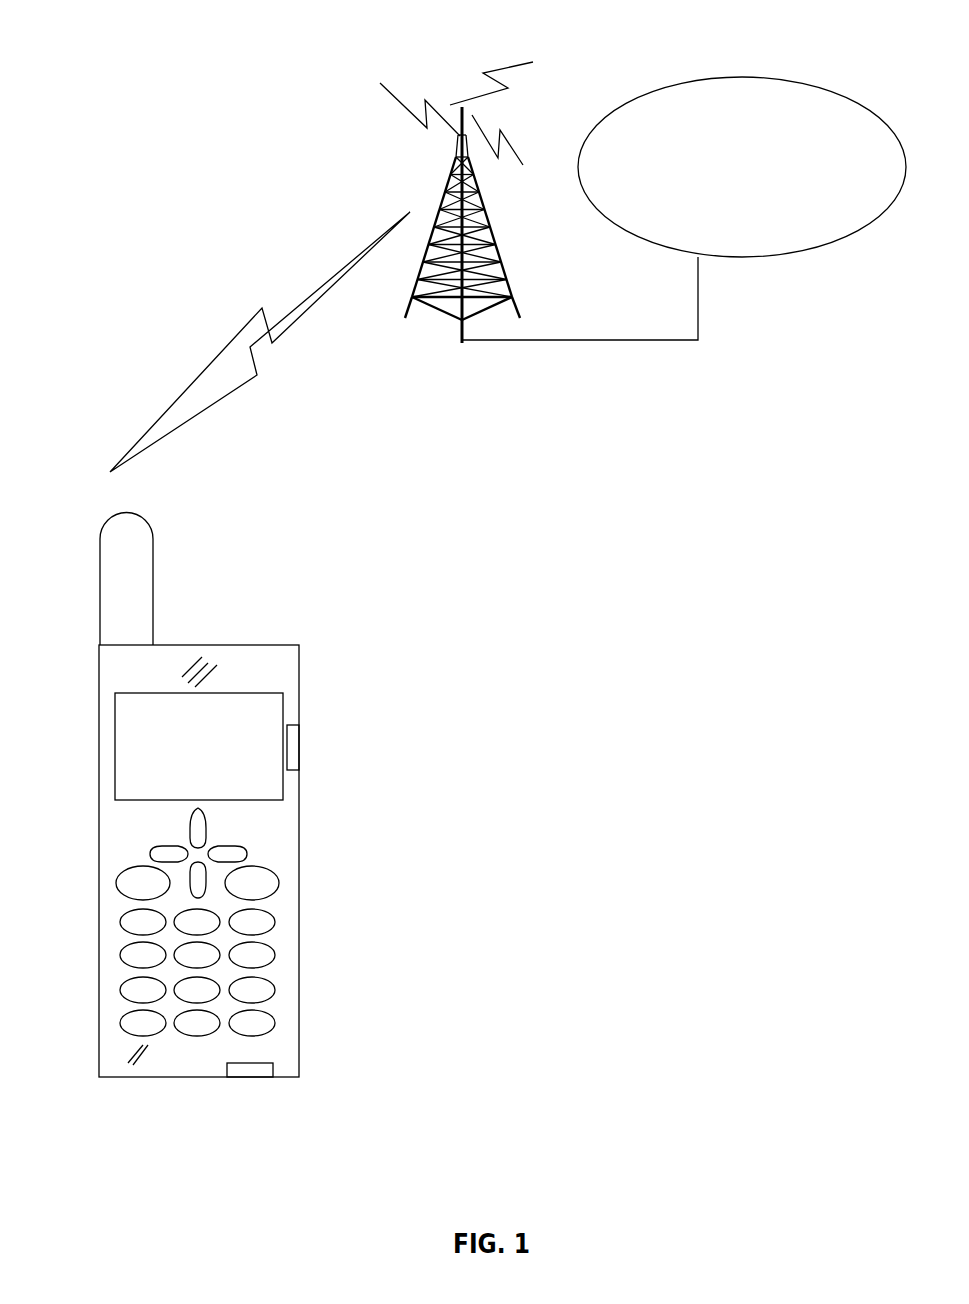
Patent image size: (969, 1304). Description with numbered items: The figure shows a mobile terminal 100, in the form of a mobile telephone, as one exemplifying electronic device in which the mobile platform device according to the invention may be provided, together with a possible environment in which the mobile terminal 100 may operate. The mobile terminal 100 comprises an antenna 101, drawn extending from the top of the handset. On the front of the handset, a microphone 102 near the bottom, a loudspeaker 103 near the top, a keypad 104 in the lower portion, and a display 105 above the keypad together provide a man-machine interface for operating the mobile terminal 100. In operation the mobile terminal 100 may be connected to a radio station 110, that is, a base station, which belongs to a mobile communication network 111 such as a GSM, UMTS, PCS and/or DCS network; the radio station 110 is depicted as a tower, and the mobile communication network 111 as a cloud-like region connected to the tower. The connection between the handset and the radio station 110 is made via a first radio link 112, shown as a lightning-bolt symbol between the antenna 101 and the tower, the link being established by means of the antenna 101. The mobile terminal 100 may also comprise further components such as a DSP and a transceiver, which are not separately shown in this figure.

The mobile terminal 100 is at (224, 566).
The antenna 101 is at (100, 592).
The microphone 102 is at (137, 1060).
The loudspeaker 103 is at (200, 670).
The keypad 104 is at (273, 920).
The display 105 is at (198, 780).
The radio station 110 is at (404, 148).
The mobile communication network 111 is at (797, 80).
The first radio link 112 is at (223, 350).